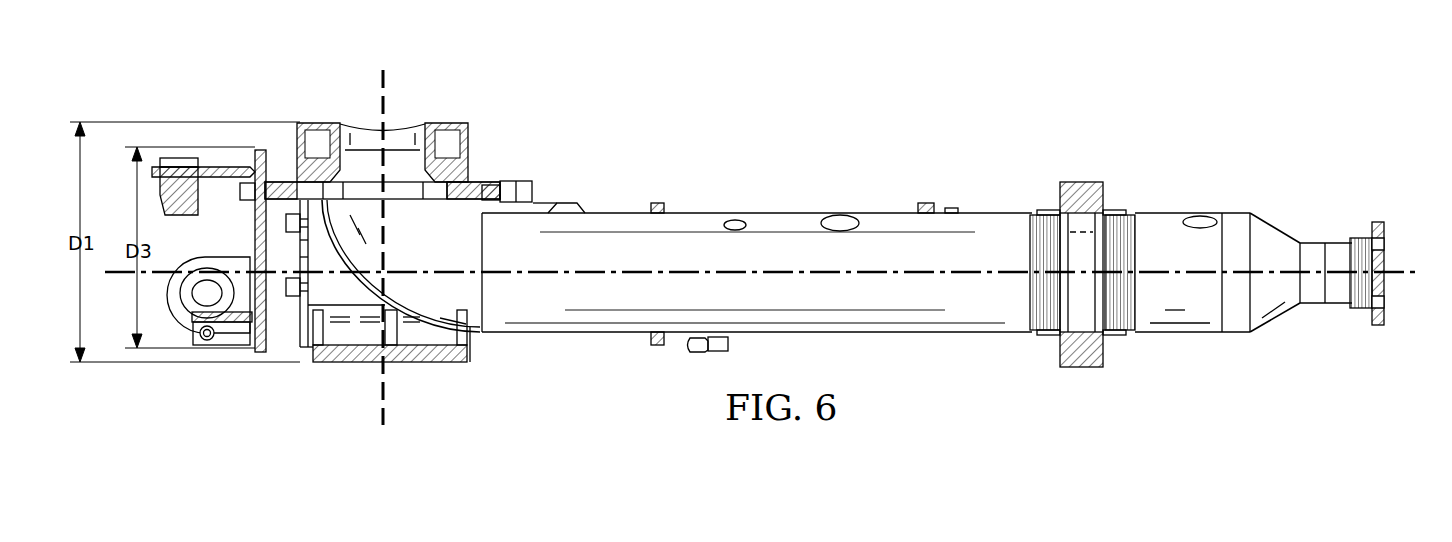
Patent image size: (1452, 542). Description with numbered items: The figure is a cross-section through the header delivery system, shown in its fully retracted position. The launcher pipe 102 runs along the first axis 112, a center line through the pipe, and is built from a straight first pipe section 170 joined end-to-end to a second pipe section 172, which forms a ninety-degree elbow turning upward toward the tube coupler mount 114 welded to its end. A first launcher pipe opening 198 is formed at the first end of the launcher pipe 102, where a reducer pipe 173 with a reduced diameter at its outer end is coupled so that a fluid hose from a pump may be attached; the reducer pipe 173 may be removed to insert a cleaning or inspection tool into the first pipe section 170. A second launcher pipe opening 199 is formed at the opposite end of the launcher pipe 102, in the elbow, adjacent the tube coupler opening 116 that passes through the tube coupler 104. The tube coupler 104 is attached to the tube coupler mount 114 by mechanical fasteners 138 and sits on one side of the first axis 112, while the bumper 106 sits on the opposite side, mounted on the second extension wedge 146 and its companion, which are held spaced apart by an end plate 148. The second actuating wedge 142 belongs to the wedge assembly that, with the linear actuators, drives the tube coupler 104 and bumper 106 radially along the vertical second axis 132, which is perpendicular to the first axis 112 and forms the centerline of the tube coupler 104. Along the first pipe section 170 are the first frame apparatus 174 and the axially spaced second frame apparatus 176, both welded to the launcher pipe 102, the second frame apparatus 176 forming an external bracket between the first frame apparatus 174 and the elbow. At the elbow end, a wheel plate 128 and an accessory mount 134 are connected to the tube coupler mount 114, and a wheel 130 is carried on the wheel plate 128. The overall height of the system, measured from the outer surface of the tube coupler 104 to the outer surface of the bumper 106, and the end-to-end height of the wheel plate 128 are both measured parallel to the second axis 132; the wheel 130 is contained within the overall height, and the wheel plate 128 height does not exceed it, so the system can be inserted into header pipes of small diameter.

The launcher pipe 102 is at (905, 336).
The tube coupler 104 is at (445, 125).
The bumper 106 is at (445, 357).
The first axis 112 is at (120, 277).
The tube coupler mount 114 is at (510, 181).
The tube coupler opening 116 is at (358, 122).
The wheel plate 128 is at (262, 160).
The wheel 130 is at (170, 330).
The second axis 132 is at (386, 398).
The accessory mount 134 is at (222, 167).
The mechanical fasteners 138 is at (468, 205).
The second actuating wedge 142 is at (566, 203).
The second extension wedge 146 is at (350, 292).
The end plate 148 is at (300, 312).
The first pipe section 170 is at (990, 333).
The second pipe section 172 is at (463, 302).
The reducer pipe 173 is at (1150, 213).
The first frame apparatus 174 is at (928, 203).
The second frame apparatus 176 is at (657, 203).
The first launcher pipe opening 198 is at (1075, 262).
The second launcher pipe opening 199 is at (405, 212).